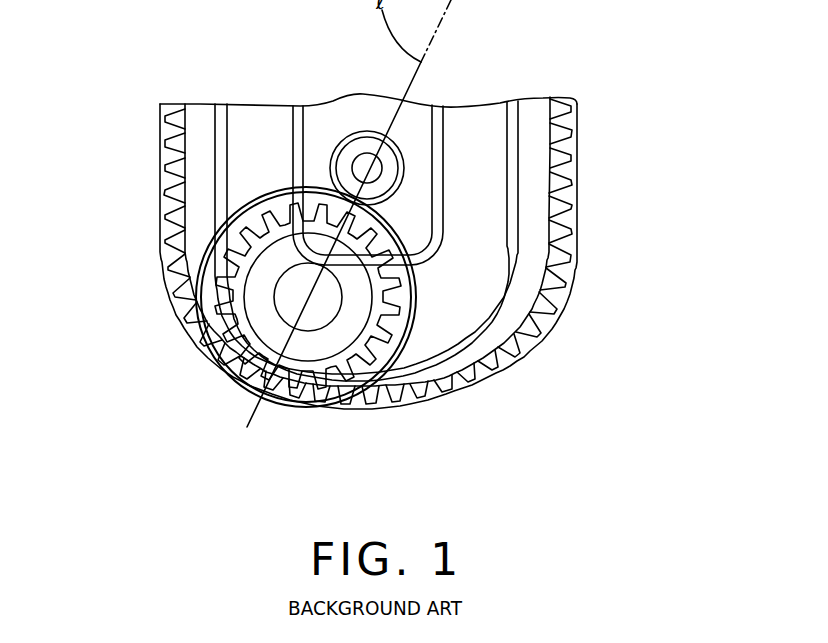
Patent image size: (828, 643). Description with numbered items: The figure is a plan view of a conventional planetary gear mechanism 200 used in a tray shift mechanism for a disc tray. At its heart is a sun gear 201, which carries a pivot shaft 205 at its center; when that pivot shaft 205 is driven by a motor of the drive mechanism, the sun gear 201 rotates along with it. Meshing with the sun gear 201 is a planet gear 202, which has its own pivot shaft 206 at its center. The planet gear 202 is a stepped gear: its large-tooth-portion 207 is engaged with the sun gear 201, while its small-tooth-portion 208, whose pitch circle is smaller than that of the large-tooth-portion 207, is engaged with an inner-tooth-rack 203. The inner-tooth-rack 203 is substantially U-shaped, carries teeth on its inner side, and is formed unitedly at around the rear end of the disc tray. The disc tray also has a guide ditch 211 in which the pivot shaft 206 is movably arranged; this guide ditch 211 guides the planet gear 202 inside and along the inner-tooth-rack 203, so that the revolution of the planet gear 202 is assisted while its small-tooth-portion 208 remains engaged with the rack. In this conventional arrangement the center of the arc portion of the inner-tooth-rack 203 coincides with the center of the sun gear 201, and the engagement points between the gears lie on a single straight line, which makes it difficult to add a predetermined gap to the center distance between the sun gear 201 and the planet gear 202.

The planetary gear mechanism 200 is at (176, 417).
The sun gear 201 is at (350, 147).
The planet gear 202 is at (196, 277).
The inner-tooth-rack 203 is at (487, 340).
The pivot shaft 205 is at (380, 168).
The pivot shaft 206 is at (297, 302).
The large-tooth-portion 207 is at (411, 297).
The small-tooth-portion 208 is at (347, 383).
The guide ditch 211 is at (512, 196).